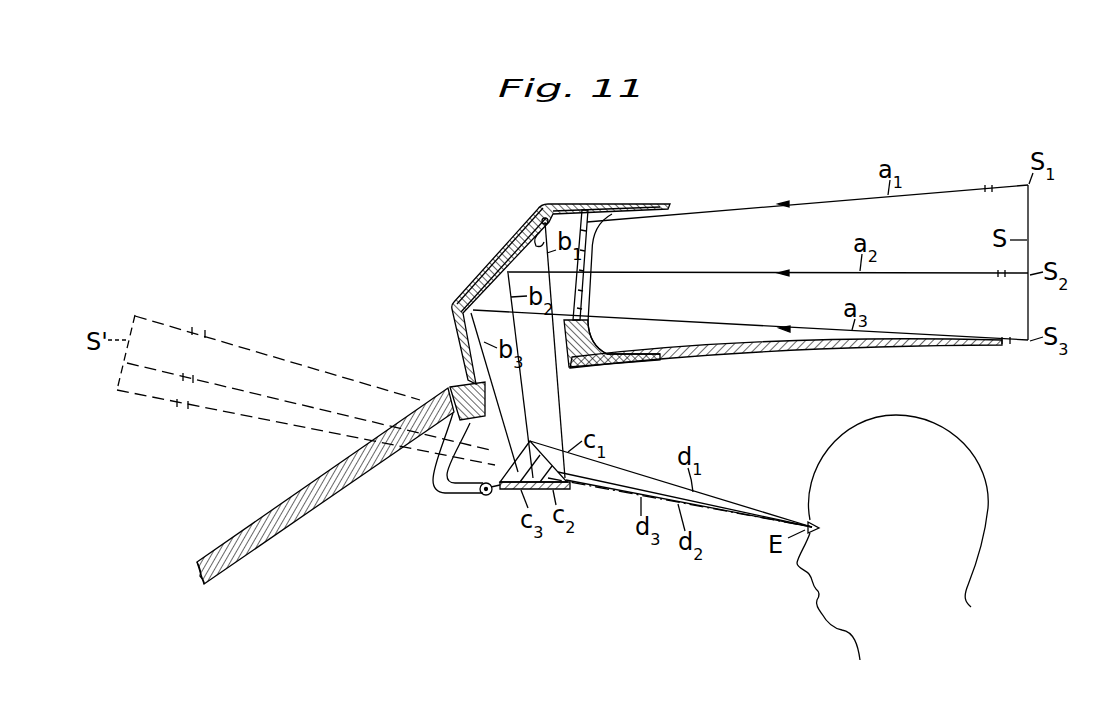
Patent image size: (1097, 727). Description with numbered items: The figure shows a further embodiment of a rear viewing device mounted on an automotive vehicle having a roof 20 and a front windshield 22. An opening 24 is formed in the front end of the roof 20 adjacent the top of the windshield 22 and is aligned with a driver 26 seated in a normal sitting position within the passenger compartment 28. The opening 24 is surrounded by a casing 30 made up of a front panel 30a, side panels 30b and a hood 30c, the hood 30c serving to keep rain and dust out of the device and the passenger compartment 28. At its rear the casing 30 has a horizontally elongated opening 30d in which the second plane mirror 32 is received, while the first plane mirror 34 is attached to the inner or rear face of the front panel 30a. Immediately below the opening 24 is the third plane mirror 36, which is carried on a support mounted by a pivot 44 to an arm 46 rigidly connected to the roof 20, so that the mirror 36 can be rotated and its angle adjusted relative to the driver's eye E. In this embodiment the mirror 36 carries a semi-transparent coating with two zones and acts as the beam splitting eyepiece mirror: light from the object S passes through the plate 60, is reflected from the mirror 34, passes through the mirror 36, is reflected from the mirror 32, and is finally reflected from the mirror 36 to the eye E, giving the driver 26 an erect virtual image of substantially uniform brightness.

The roof 20 is at (733, 357).
The front windshield 22 is at (272, 537).
The opening 24 is at (562, 378).
The driver 26 is at (903, 501).
The passenger compartment 28 is at (764, 450).
The casing 30 is at (458, 342).
The front panel 30a is at (490, 258).
The side panels 30b is at (594, 336).
The hood 30c is at (622, 204).
The horizontally elongated opening 30d is at (579, 313).
The second plane mirror 32 is at (571, 490).
The first plane mirror 34 is at (541, 217).
The third plane mirror 36 is at (498, 495).
The pivot 44 is at (482, 498).
The arm 46 is at (436, 492).
The plate 60 is at (590, 249).